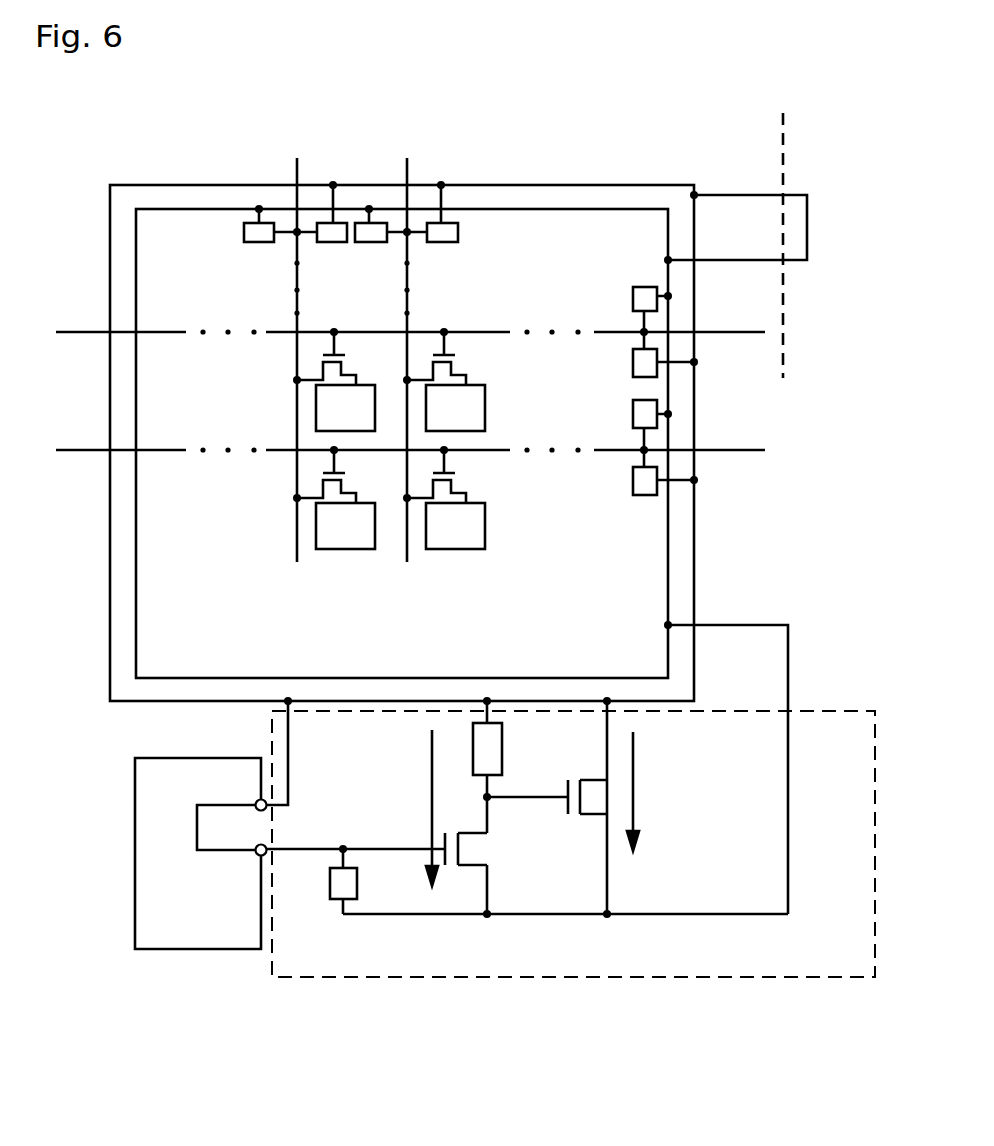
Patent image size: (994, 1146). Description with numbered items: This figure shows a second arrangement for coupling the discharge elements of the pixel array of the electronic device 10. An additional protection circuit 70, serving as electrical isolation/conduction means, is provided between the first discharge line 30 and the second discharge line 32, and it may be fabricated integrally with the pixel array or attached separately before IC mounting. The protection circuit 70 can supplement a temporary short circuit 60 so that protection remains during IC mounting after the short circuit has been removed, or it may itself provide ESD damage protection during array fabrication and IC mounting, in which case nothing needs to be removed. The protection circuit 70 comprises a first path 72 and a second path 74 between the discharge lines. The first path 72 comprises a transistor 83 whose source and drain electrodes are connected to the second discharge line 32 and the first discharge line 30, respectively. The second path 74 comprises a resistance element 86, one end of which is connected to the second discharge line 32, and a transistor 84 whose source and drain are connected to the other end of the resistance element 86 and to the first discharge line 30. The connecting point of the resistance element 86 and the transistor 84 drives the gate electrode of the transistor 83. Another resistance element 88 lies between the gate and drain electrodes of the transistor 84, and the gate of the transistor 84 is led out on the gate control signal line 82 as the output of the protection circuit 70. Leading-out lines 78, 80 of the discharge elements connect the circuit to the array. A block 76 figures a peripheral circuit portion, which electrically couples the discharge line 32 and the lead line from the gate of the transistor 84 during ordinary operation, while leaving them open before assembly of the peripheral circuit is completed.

The display device 10 is at (648, 150).
The first discharge line 30 is at (668, 522).
The second discharge line 32 is at (694, 560).
The temporary short circuit 60 is at (807, 225).
The protection circuit 70 is at (575, 980).
The first path 72 is at (633, 795).
The second path 74 is at (430, 745).
The block figuring a peripheral circuit portion 76 is at (197, 950).
The leading-out line of a discharge element 78 is at (288, 770).
The leading-out line of a discharge element 80 is at (428, 914).
The gate control signal line 82 is at (393, 852).
The transistor 83 is at (580, 814).
The transistor 84 is at (470, 868).
The resistance element 86 is at (502, 735).
The resistance element 88 is at (357, 862).